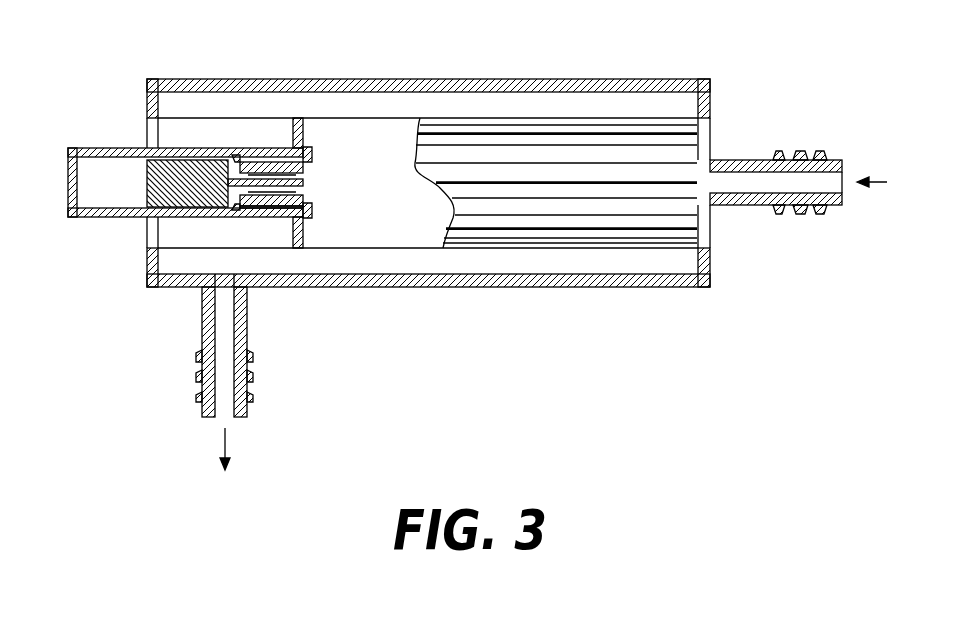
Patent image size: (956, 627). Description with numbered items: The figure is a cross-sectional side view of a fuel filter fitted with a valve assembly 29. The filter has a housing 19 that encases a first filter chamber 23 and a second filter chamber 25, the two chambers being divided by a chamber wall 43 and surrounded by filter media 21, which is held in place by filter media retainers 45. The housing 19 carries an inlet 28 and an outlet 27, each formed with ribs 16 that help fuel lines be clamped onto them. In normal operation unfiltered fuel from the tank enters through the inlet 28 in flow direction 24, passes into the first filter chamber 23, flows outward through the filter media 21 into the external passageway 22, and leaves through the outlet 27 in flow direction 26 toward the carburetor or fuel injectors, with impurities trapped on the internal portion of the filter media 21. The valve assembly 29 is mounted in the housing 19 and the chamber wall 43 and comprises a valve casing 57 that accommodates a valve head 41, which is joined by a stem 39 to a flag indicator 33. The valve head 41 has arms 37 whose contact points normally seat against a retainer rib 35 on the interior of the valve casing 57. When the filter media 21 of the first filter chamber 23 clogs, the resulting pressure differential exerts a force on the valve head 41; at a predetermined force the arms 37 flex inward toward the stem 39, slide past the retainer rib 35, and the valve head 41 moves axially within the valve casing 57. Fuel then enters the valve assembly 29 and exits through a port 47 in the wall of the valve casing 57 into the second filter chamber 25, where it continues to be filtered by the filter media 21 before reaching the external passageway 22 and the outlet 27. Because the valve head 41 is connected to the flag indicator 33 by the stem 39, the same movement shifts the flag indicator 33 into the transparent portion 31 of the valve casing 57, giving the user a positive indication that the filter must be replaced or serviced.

The ribs 16 is at (815, 151).
The housing 19 is at (507, 79).
The filter media 21 is at (515, 228).
The external passageway 22 is at (352, 96).
The first filter chamber 23 is at (398, 220).
The flow direction 24 is at (880, 182).
The second filter chamber 25 is at (173, 130).
The flow direction 26 is at (226, 440).
The outlet 27 is at (218, 325).
The inlet 28 is at (757, 183).
The valve assembly 29 is at (90, 170).
The transparent portion 31 is at (77, 222).
The flag indicator 33 is at (177, 195).
The retainer rib 35 is at (237, 155).
The arms 37 is at (268, 160).
The stem 39 is at (263, 210).
The valve head 41 is at (310, 193).
The chamber wall 43 is at (307, 133).
The filter media retainers 45 is at (702, 215).
The port 47 is at (247, 160).
The valve casing 57 is at (207, 145).